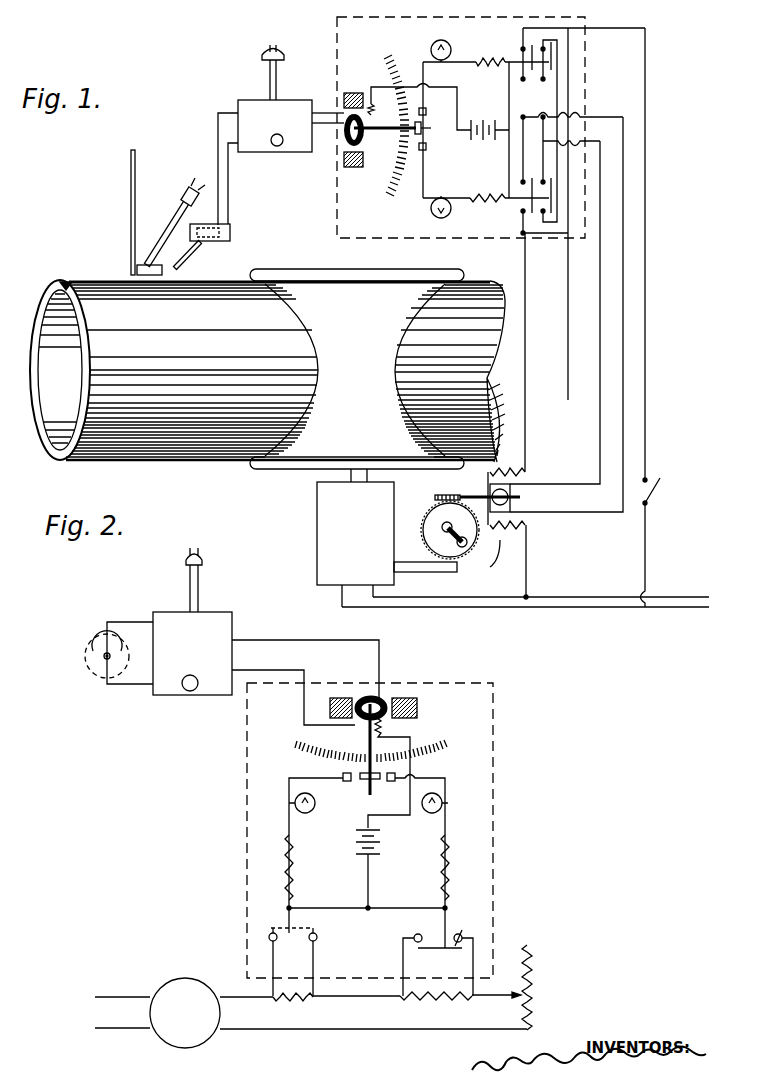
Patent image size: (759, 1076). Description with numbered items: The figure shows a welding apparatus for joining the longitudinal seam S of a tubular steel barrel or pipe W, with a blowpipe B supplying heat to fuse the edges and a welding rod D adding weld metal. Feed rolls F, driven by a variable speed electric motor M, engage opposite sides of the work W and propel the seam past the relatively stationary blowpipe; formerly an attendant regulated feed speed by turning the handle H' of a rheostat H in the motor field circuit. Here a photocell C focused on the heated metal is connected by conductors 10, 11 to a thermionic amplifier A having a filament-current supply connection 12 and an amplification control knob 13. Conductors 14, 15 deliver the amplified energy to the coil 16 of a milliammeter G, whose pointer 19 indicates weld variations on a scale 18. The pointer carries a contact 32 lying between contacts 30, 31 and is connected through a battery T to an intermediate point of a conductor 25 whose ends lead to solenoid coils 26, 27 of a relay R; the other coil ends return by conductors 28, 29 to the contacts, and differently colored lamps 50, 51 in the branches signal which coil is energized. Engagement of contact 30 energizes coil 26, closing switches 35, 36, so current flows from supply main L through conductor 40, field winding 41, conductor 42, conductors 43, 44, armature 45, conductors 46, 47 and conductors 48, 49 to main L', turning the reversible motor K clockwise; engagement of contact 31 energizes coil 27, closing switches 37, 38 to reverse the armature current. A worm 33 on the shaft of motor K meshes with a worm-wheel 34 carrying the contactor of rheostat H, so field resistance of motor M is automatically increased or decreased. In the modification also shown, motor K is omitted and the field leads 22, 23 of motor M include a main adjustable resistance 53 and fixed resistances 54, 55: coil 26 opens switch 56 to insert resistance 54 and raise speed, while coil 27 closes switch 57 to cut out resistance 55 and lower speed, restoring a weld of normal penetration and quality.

In FIG. 1, the conductor 10 is at (218, 158).
In FIG. 2, the conductor 10 is at (107, 622).
In FIG. 1, the conductor 11 is at (229, 208).
In FIG. 2, the conductor 11 is at (112, 688).
In FIG. 1, the filament-current supply connection 12 is at (269, 66).
In FIG. 2, the filament-current supply connection 12 is at (199, 578).
In FIG. 1, the amplification control knob 13 is at (280, 148).
In FIG. 2, the amplification control knob 13 is at (188, 691).
In FIG. 1, the conductor 14 is at (323, 133).
In FIG. 2, the conductor 14 is at (290, 664).
In FIG. 1, the conductor 15 is at (318, 108).
In FIG. 2, the conductor 15 is at (290, 633).
In FIG. 1, the coil 16 is at (364, 140).
In FIG. 2, the coil 16 is at (372, 698).
In FIG. 1, the scale 18 is at (393, 200).
In FIG. 2, the scale 18 is at (292, 748).
In FIG. 1, the pointer 19 is at (376, 127).
In FIG. 2, the pointer 19 is at (367, 740).
In FIG. 1, the field lead 22 is at (420, 573).
In FIG. 2, the field lead 22 is at (404, 997).
In FIG. 1, the field lead 23 is at (455, 573).
In FIG. 2, the field lead 23 is at (290, 1029).
In FIG. 1, the conductor 25 is at (509, 108).
In FIG. 2, the conductor 25 is at (390, 907).
In FIG. 1, the solenoid coil 26 is at (496, 203).
In FIG. 2, the solenoid coil 26 is at (286, 862).
In FIG. 1, the solenoid coil 27 is at (492, 60).
In FIG. 2, the solenoid coil 27 is at (446, 852).
In FIG. 1, the conductor 28 is at (423, 199).
In FIG. 1, the conductor 29 is at (423, 62).
In FIG. 1, the contact 30 is at (428, 146).
In FIG. 2, the contact 30 is at (346, 781).
In FIG. 1, the contact 31 is at (427, 111).
In FIG. 2, the contact 31 is at (391, 781).
In FIG. 1, the contact 32 is at (428, 129).
In FIG. 2, the contact 32 is at (366, 782).
In FIG. 1, the worm 33 is at (460, 497).
In FIG. 1, the worm-wheel 34 is at (436, 500).
In FIG. 1, the switch 35 is at (545, 202).
In FIG. 1, the switch 36 is at (554, 190).
In FIG. 1, the switch 37 is at (532, 62).
In FIG. 1, the switch 38 is at (552, 70).
In FIG. 1, the conductor 40 is at (528, 569).
In FIG. 1, the field winding 41 is at (492, 567).
In FIG. 1, the conductor 42 is at (527, 335).
In FIG. 1, the conductor 43 is at (525, 152).
In FIG. 1, the conductor 44 is at (625, 226).
In FIG. 1, the armature 45 is at (516, 500).
In FIG. 1, the conductor 46 is at (602, 250).
In FIG. 1, the conductor 47 is at (541, 165).
In FIG. 1, the conductor 48 is at (568, 240).
In FIG. 1, the conductor 49 is at (648, 131).
In FIG. 1, the incandescent lamp 50 is at (440, 218).
In FIG. 2, the incandescent lamp 50 is at (300, 812).
In FIG. 1, the incandescent lamp 51 is at (462, 34).
In FIG. 2, the incandescent lamp 51 is at (430, 813).
In FIG. 2, the main adjustable resistance 53 is at (532, 995).
In FIG. 2, the fixed resistance 54 is at (288, 1000).
In FIG. 2, the fixed resistance 55 is at (440, 999).
In FIG. 2, the switch 56 is at (296, 940).
In FIG. 2, the switch 57 is at (448, 942).
In FIG. 1, the thermionic amplifier A is at (270, 153).
In FIG. 2, the thermionic amplifier A is at (162, 612).
In FIG. 1, the blowpipe B is at (178, 218).
In FIG. 1, the photocell C is at (226, 232).
In FIG. 2, the photocell C is at (92, 654).
In FIG. 1, the pickup lead C' is at (202, 255).
In FIG. 1, the welding rod D is at (131, 201).
In FIG. 1, the feed rolls F is at (283, 468).
In FIG. 1, the milliammeter G is at (354, 115).
In FIG. 1, the rheostat H is at (459, 530).
In FIG. 1, the handle H' is at (470, 543).
In FIG. 1, the reversible electric motor K is at (528, 522).
In FIG. 1, the current supply main L is at (541, 583).
In FIG. 2, the current supply main L is at (308, 984).
In FIG. 1, the current supply main L' is at (526, 588).
In FIG. 2, the current supply main L' is at (311, 1045).
In FIG. 1, the variable speed electric motor M is at (318, 537).
In FIG. 2, the variable speed electric motor M is at (186, 978).
In FIG. 1, the relay R is at (480, 24).
In FIG. 2, the relay R is at (452, 683).
In FIG. 1, the longitudinal seam S is at (62, 285).
In FIG. 1, the battery T is at (476, 140).
In FIG. 2, the battery T is at (354, 846).
In FIG. 1, the barrel or pipe W is at (38, 312).